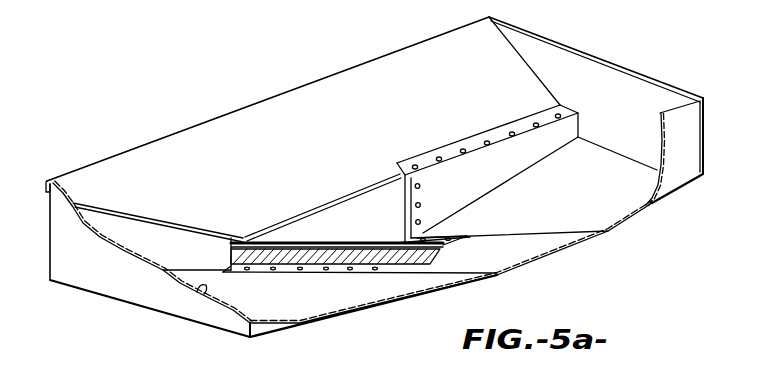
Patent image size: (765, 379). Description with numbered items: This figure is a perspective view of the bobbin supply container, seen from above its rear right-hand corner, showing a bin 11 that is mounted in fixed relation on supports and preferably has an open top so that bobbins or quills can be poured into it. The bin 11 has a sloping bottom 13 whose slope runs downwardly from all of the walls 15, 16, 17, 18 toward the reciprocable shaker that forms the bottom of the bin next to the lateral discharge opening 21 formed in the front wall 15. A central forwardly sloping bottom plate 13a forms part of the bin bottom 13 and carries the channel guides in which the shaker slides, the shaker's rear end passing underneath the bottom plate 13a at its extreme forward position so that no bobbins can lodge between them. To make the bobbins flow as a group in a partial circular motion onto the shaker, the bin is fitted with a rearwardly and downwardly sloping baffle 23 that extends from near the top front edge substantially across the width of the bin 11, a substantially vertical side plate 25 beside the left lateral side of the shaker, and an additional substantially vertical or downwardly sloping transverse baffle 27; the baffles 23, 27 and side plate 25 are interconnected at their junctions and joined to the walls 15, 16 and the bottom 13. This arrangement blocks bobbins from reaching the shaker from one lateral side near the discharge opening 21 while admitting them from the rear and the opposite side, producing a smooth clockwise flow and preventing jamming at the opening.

The bin 11 is at (195, 124).
The sloping bottom 13 is at (340, 306).
The bottom plate 13a is at (561, 247).
The front wall 15 is at (180, 254).
The wall 16 is at (621, 112).
The wall 17 is at (672, 190).
The wall 18 is at (198, 294).
The discharge opening 21 is at (290, 265).
The baffle 23 is at (381, 117).
The side plate 25 is at (358, 240).
The transverse baffle 27 is at (465, 199).